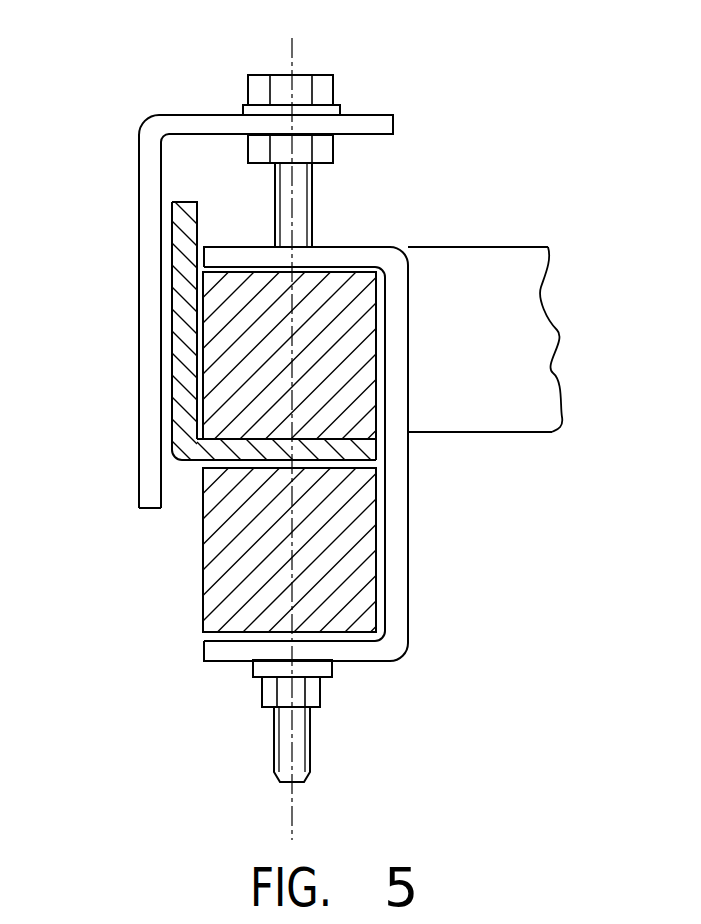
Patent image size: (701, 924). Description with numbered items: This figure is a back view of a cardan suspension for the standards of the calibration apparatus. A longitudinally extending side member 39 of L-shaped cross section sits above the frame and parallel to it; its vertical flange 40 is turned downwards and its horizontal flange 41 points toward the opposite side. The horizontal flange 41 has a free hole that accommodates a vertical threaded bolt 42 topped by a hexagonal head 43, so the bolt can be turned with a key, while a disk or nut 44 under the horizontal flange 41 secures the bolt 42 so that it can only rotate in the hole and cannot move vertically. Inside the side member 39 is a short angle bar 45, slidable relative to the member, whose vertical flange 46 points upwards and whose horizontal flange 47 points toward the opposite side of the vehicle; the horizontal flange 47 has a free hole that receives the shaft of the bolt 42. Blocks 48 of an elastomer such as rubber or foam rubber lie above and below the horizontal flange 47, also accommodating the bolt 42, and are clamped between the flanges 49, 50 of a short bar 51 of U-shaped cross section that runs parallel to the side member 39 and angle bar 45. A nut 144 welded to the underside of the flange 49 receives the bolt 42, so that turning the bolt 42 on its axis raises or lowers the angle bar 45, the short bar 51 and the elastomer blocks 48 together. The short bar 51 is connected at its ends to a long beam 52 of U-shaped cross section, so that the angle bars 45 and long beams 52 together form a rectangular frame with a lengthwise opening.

The side member 39 is at (142, 122).
The vertical flange 40 is at (140, 270).
The horizontal flange 41 is at (387, 113).
The bolt 42 is at (312, 202).
The hexagonal head 43 is at (258, 75).
The disk or nut 44 is at (333, 147).
The short angle bar 45 is at (185, 460).
The vertical flange 46 is at (182, 347).
The horizontal flange 47 is at (330, 452).
The elastomer block 48 is at (353, 290).
The flange 49 is at (350, 660).
The flange 50 is at (347, 247).
The short bar 51 is at (398, 462).
The long beam 52 is at (528, 316).
The nut 144 is at (273, 690).